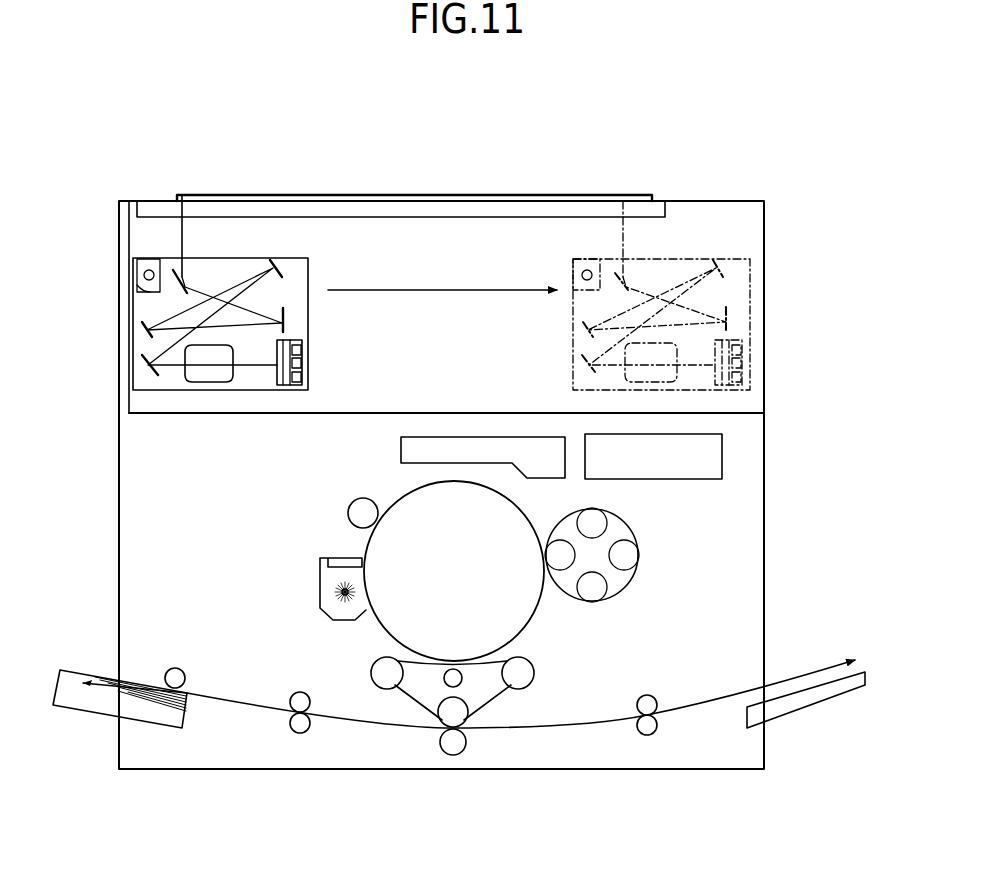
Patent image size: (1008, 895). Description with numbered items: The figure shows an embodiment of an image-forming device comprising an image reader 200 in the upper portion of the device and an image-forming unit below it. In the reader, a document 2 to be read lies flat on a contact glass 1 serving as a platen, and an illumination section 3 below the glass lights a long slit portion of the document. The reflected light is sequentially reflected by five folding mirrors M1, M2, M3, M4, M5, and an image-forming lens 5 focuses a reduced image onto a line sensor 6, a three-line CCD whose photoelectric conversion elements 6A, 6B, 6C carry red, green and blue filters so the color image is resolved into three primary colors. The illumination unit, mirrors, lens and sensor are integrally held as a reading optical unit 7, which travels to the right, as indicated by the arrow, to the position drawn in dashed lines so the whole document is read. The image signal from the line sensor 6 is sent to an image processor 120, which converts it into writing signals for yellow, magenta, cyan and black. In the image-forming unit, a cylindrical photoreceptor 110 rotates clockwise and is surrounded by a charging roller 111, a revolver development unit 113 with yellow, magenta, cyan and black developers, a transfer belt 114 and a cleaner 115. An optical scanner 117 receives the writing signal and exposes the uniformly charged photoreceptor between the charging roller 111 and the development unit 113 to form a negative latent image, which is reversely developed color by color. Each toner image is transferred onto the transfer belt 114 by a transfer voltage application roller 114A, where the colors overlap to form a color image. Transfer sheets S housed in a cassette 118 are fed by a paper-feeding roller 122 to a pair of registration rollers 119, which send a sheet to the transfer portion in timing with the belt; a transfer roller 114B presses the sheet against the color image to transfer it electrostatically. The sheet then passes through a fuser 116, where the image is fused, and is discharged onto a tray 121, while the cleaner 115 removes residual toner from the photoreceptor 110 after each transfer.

The contact glass 1 is at (138, 216).
The document 2 is at (237, 195).
The illumination section 3 is at (137, 263).
The image-forming lens 5 is at (217, 382).
The line sensor 6 is at (326, 392).
The photoelectric conversion element 6A is at (302, 347).
The photoelectric conversion element 6B is at (302, 360).
The photoelectric conversion element 6C is at (302, 373).
The reading optical unit 7 is at (128, 380).
The folding mirror M1 is at (173, 280).
The folding mirror M2 is at (282, 273).
The folding mirror M3 is at (148, 337).
The folding mirror M4 is at (286, 308).
The folding mirror M5 is at (153, 376).
The image reader 200 is at (742, 240).
The photoreceptor 110 is at (454, 571).
The charging roller 111 is at (356, 518).
The revolver development unit 113 is at (617, 585).
The transfer belt 114 is at (466, 712).
The transfer voltage application roller 114A is at (452, 681).
The transfer roller 114B is at (465, 747).
The cleaner 115 is at (320, 590).
The fuser 116 is at (655, 707).
The optical scanner 117 is at (401, 451).
The cassette 118 is at (137, 717).
The pair of registration rollers 119 is at (292, 723).
The image processor 120 is at (685, 479).
The tray 121 is at (802, 698).
The paper-feeding roller 122 is at (183, 669).
The transfer sheet S is at (138, 682).